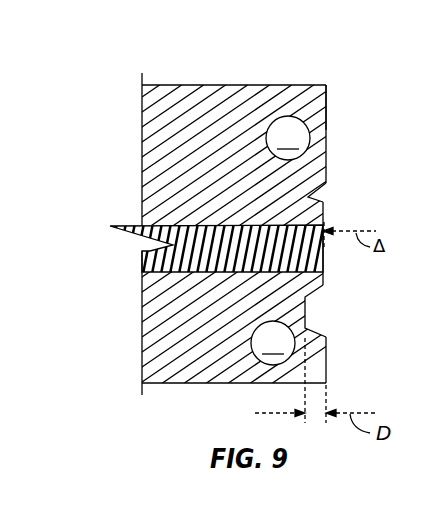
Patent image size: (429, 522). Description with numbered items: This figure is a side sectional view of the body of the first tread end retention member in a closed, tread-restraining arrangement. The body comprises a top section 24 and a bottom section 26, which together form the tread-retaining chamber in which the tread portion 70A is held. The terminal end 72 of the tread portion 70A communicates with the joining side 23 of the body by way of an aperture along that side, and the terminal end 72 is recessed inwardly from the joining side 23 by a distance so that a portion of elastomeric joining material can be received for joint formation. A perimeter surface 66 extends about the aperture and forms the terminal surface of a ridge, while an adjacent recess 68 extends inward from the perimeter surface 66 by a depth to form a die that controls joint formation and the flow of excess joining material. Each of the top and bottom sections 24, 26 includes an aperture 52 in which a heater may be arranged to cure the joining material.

The top section 24 is at (168, 102).
The joining side 23 is at (326, 96).
The bottom section 26 is at (152, 355).
The aperture 52 is at (280, 240).
The recess 68 is at (317, 192).
The perimeter surface 66 is at (323, 214).
The tread portion 70A is at (141, 252).
The terminal end 72 is at (324, 253).